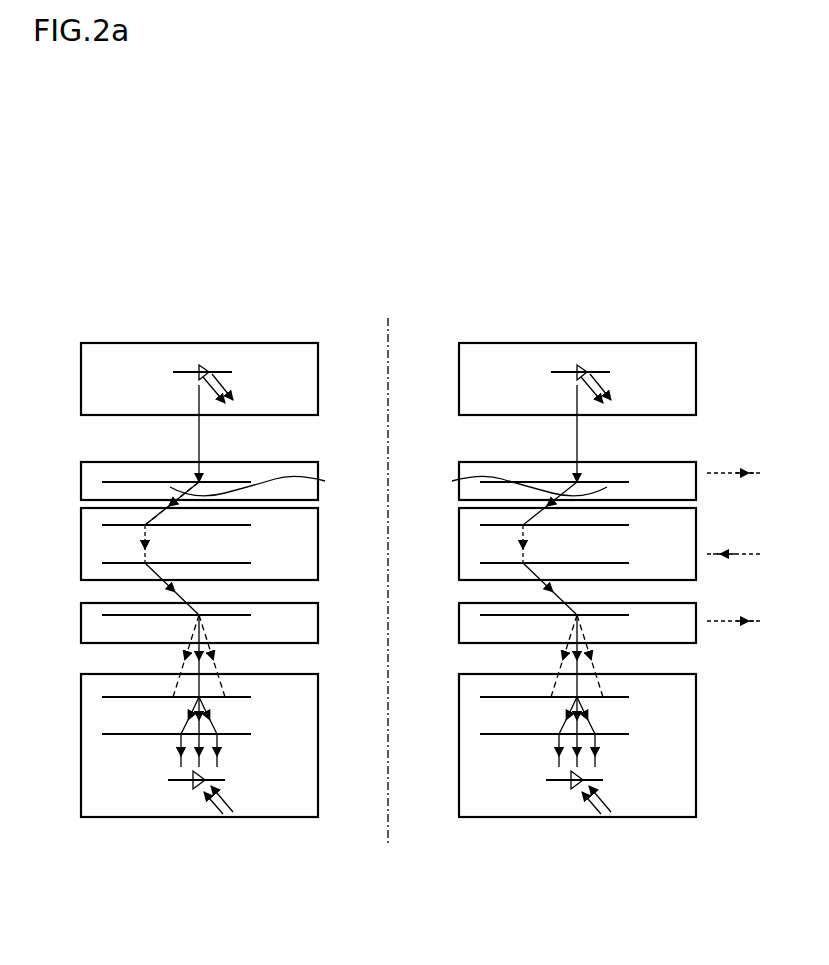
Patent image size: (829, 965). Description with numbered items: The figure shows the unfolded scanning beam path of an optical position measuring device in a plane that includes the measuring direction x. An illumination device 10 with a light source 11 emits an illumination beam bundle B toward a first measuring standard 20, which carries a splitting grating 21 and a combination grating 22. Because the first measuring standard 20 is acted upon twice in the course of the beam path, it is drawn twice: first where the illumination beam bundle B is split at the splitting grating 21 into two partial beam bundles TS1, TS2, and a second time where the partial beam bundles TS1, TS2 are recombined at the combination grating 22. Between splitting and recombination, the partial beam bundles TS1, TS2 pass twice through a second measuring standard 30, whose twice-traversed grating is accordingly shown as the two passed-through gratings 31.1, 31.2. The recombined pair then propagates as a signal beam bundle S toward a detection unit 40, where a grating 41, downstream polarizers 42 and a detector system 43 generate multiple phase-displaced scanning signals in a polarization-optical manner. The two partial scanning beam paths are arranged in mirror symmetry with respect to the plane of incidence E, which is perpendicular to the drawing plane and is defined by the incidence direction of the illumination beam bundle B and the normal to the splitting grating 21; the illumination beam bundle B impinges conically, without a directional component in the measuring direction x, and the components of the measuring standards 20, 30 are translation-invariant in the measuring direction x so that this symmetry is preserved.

The illumination device 10 is at (81, 360).
The light source 11 is at (197, 365).
The first measuring standard 20 is at (82, 472).
The splitting grating 21 is at (127, 480).
The combination grating 22 is at (127, 617).
The second measuring standard 30 is at (82, 538).
The first passed-through grating 31.1 is at (238, 526).
The second passed-through grating 31.2 is at (238, 562).
The detection unit 40 is at (82, 708).
The grating 41 is at (240, 693).
The polarizers 42 is at (240, 730).
The detector system 43 is at (226, 777).
The illumination beam bundle B is at (200, 434).
The signal beam bundle S is at (205, 651).
The plane of incidence E is at (389, 433).
The first partial beam bundle TS1 is at (272, 484).
The second partial beam bundle TS2 is at (505, 484).
The measuring direction X is at (724, 472).